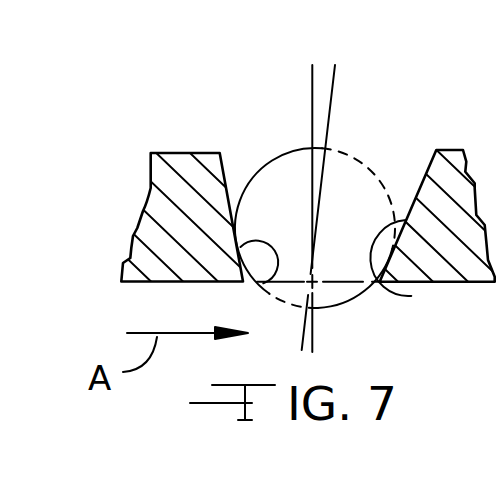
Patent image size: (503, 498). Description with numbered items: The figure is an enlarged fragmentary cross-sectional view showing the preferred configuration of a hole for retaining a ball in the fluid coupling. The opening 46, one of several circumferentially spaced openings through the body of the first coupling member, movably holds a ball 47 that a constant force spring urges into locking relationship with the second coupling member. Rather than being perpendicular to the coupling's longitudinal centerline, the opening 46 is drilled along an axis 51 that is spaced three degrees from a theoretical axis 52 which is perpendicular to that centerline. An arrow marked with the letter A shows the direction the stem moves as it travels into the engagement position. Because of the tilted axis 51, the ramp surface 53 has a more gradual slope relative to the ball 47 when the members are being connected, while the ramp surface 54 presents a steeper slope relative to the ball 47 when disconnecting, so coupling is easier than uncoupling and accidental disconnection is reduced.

The opening 46 is at (236, 172).
The ball 47 is at (346, 297).
The axis 51 is at (333, 105).
The theoretical axis 52 is at (312, 86).
The ramp surface 53 is at (411, 296).
The ramp surface 54 is at (263, 283).